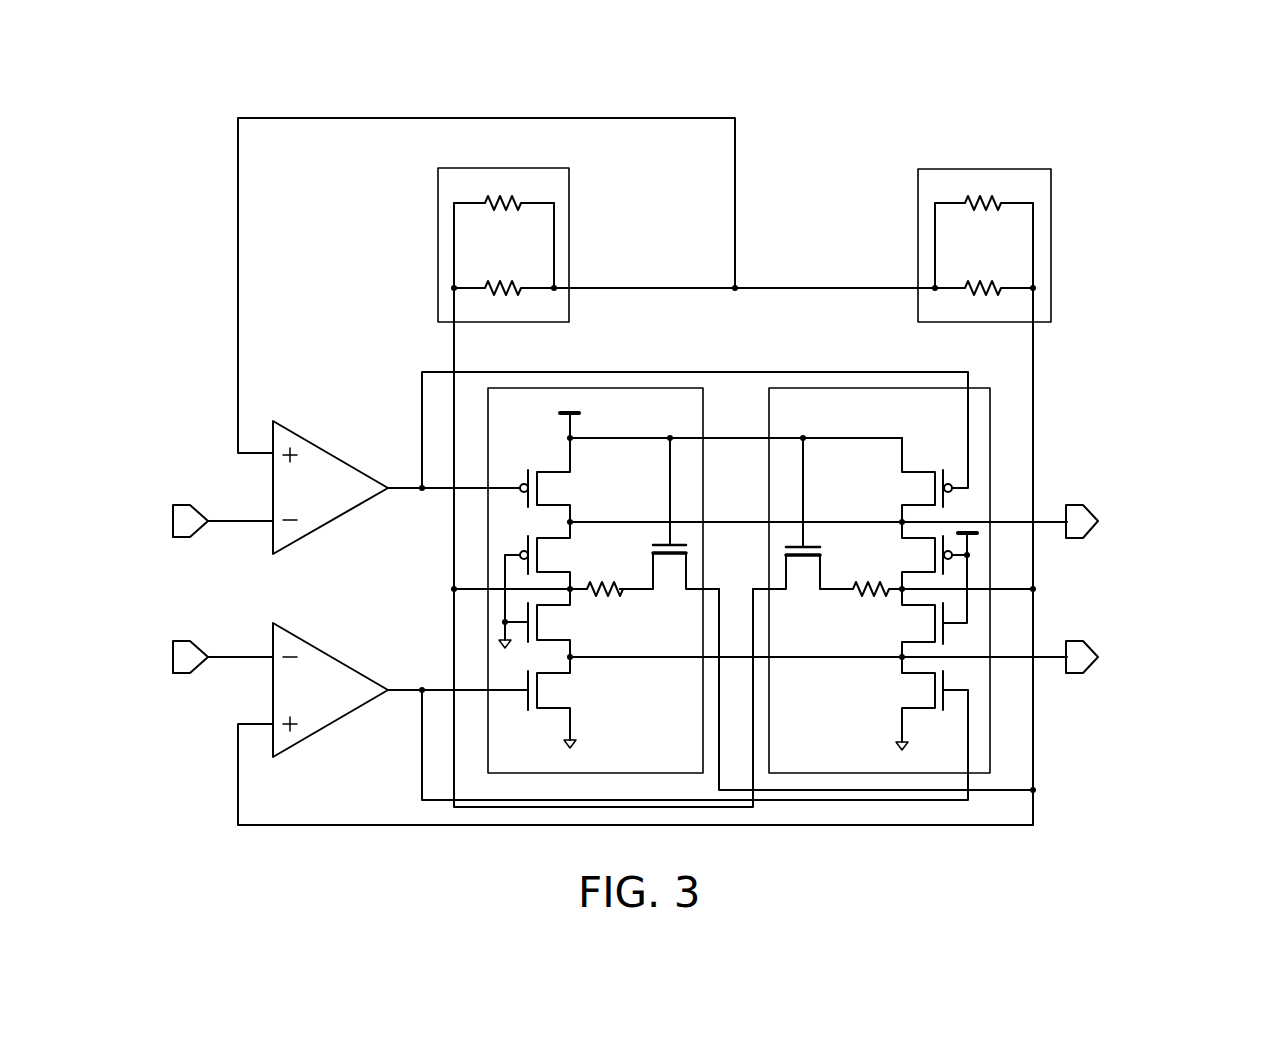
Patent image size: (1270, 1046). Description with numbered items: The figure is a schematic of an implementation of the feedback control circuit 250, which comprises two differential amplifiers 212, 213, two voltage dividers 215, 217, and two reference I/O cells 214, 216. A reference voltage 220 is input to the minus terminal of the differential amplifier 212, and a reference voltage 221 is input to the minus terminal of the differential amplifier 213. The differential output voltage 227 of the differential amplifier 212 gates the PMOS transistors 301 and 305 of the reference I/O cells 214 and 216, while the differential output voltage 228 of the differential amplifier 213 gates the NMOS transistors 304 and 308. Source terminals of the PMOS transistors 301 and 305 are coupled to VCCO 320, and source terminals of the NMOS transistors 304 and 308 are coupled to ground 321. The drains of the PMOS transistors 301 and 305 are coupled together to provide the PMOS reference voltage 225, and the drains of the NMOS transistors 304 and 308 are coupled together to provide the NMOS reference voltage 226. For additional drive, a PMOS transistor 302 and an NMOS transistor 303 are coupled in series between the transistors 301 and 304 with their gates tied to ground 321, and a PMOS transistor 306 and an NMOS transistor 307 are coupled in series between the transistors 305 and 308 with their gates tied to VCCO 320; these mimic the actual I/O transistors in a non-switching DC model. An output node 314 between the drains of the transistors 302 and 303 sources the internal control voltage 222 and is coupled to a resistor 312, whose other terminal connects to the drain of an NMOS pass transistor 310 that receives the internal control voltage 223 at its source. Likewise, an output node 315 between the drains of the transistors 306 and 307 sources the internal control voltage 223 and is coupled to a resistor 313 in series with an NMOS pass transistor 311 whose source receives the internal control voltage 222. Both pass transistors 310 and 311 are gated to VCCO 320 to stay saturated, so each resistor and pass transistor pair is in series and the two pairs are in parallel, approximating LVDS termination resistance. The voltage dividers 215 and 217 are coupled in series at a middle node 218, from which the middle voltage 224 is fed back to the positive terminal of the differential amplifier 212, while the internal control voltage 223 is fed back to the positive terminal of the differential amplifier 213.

The feedback control circuit 250 is at (1257, 68).
The middle voltage 224 is at (385, 118).
The voltage divider 215 is at (570, 168).
The voltage divider 217 is at (1051, 169).
The middle node 218 is at (735, 288).
The differential amplifier 212 is at (337, 498).
The differential amplifier 213 is at (337, 699).
The reference voltage 220 is at (178, 516).
The reference voltage 221 is at (180, 653).
The differential output voltage 227 is at (390, 485).
The differential output voltage 228 is at (429, 655).
The reference I/O cell 214 is at (696, 770).
The reference I/O cell 216 is at (814, 770).
The internal control voltage 222 is at (454, 560).
The internal control voltage 223 is at (1013, 589).
The PMOS reference voltage 225 is at (1088, 524).
The NMOS reference voltage 226 is at (1088, 660).
The PMOS transistor 301 is at (637, 488).
The PMOS transistor 302 is at (626, 550).
The NMOS transistor 303 is at (632, 650).
The NMOS transistor 304 is at (639, 692).
The PMOS transistor 305 is at (896, 489).
The PMOS transistor 306 is at (896, 556).
The NMOS transistor 307 is at (896, 625).
The NMOS transistor 308 is at (896, 690).
The NMOS pass transistor 310 is at (686, 596).
The NMOS pass transistor 311 is at (804, 596).
The resistor 312 is at (646, 567).
The resistor 313 is at (867, 567).
The output node 314 is at (632, 622).
The output node 315 is at (898, 592).
The VCCO 320 is at (641, 417).
The ground 321 is at (506, 648).